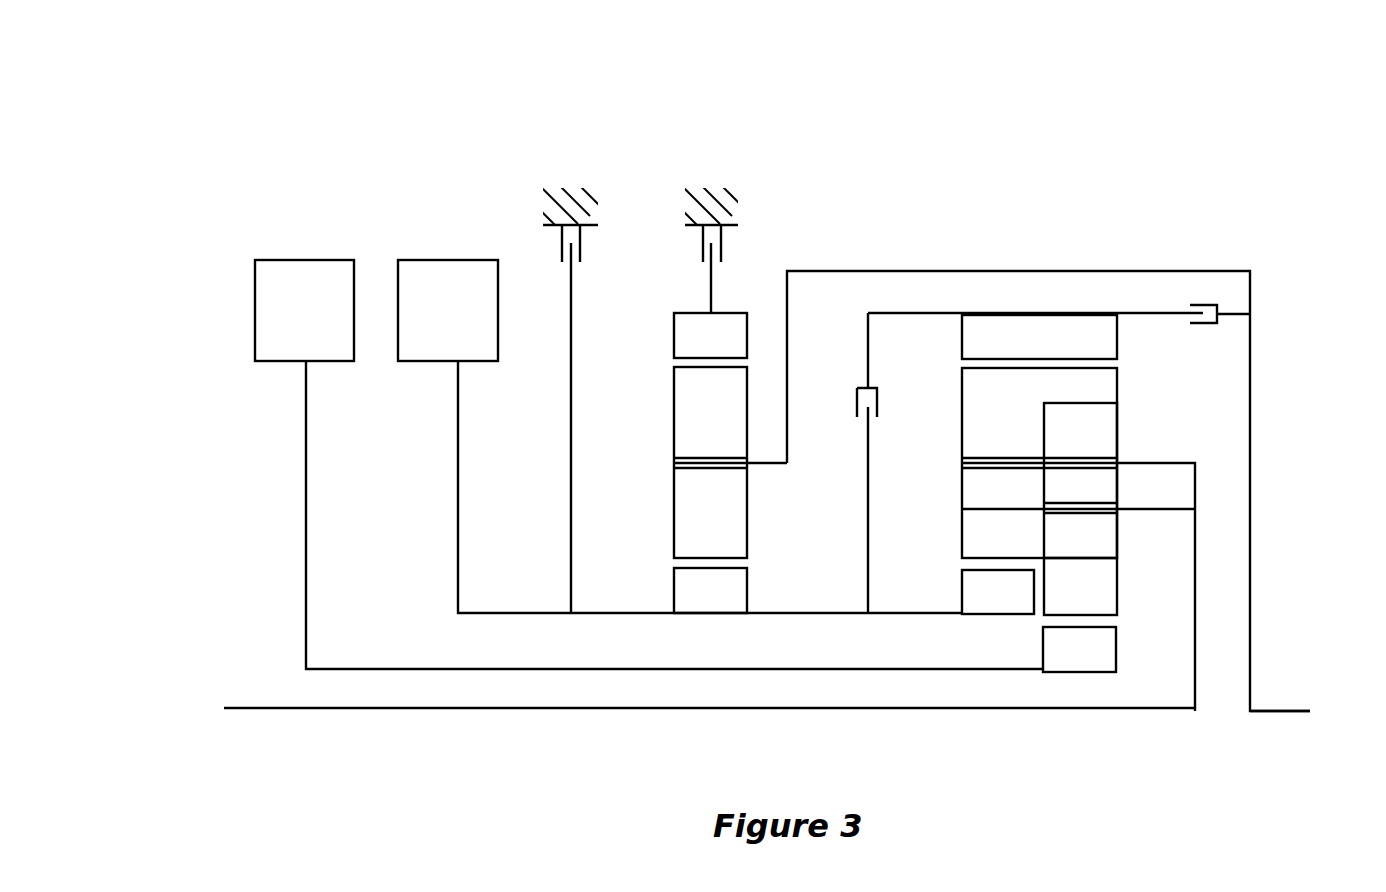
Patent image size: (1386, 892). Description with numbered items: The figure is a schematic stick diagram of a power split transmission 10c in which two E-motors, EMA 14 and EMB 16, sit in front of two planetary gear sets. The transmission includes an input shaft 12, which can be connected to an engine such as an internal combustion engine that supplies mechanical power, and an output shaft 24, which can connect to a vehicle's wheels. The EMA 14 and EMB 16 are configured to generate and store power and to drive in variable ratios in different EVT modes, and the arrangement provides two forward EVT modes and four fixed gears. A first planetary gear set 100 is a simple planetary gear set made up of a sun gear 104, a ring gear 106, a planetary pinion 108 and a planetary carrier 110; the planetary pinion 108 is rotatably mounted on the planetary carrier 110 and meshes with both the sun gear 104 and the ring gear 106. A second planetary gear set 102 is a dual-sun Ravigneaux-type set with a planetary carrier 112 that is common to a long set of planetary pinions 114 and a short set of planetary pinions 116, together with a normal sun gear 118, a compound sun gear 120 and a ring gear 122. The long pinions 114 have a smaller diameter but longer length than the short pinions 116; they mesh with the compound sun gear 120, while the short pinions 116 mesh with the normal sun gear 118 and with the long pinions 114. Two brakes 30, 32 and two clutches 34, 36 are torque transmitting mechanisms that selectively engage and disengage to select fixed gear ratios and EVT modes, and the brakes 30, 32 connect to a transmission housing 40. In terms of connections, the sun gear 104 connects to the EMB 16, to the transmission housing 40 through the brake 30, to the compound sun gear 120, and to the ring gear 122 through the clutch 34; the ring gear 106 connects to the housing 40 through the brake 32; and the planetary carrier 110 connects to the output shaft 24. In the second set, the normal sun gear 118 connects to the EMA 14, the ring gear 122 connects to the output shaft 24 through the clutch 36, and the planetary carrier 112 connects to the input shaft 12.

The power split transmission 10c is at (803, 92).
The input shaft 12 is at (313, 708).
The EMA 14 is at (306, 260).
The EMB 16 is at (448, 260).
The output shaft 24 is at (1277, 713).
The brake 30 is at (606, 247).
The brake 32 is at (746, 247).
The clutch 34 is at (830, 404).
The clutch 36 is at (1178, 296).
The transmission housing 40 is at (567, 174).
The first planetary gear set 100 is at (723, 450).
The second planetary gear set 102 is at (1055, 245).
The sun gear 104 is at (674, 597).
The ring gear 106 is at (674, 518).
The planetary pinion 108 is at (674, 337).
The planetary carrier 110 is at (757, 462).
The planetary carrier 112 is at (1195, 490).
The long set of planetary pinions 114 is at (962, 410).
The short set of planetary pinions 116 is at (1117, 442).
The normal sun gear 118 is at (1116, 650).
The compound sun gear 120 is at (962, 592).
The ring gear 122 is at (1117, 328).